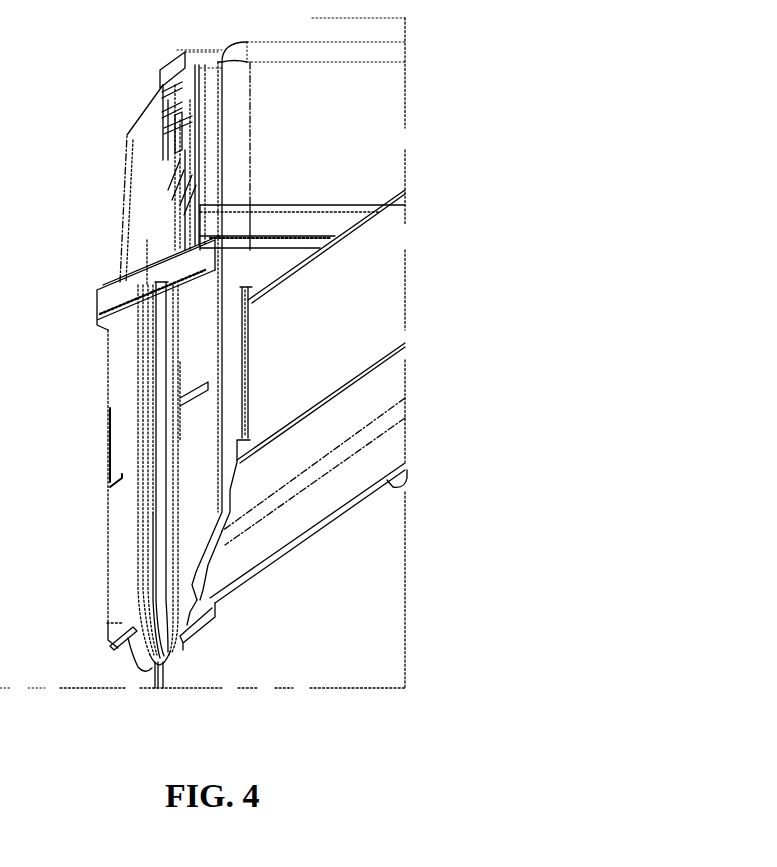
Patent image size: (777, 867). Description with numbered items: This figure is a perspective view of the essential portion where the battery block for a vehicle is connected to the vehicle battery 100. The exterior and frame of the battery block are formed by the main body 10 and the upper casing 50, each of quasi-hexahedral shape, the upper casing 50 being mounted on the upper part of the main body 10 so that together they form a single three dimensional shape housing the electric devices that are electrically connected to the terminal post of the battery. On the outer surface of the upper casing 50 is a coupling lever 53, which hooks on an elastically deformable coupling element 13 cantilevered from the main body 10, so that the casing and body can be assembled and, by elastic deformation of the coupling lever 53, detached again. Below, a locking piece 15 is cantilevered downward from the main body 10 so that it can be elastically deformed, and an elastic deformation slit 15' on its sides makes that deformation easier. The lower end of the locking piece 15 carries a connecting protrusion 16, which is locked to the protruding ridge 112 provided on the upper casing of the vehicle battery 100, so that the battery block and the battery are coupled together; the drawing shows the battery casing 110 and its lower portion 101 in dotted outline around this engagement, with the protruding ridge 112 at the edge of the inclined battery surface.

The main body 10 is at (108, 400).
The coupling element 13 is at (165, 222).
The locking piece 15 is at (121, 452).
The elastic deformation slit 15' is at (112, 642).
The connecting protrusion 16 is at (215, 645).
The upper casing 50 is at (120, 206).
The coupling lever 53 is at (160, 70).
The vehicle battery 100 is at (150, 687).
The bottom surface 101 is at (355, 664).
The housing 110 is at (396, 263).
The protruding ridge 112 is at (404, 486).